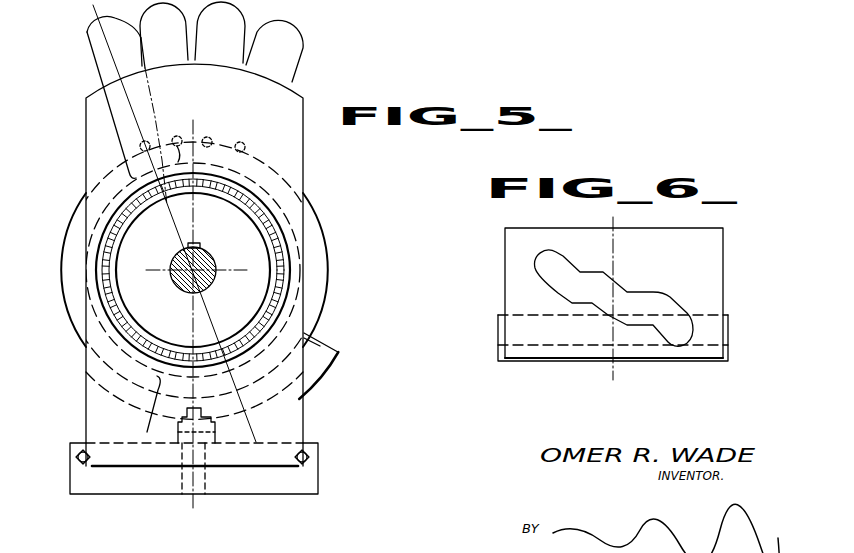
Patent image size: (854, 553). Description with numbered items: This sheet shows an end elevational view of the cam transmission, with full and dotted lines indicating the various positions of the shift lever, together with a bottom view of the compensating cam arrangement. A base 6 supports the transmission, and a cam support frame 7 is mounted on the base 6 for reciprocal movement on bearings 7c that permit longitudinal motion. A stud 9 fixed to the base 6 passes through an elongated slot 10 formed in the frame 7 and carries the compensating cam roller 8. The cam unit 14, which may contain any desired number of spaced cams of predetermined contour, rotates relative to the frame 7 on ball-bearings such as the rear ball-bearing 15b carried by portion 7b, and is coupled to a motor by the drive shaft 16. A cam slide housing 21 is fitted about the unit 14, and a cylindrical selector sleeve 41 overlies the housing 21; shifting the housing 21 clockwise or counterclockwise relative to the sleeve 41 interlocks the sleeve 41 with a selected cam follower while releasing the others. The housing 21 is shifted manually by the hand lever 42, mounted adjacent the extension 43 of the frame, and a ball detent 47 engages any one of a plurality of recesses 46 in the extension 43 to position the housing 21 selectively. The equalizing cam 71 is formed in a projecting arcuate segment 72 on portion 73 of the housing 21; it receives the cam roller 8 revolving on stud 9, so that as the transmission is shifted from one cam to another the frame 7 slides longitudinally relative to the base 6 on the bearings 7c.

In FIG. 5, the base 6 is at (313, 490).
In FIG. 5, the cam support frame 7 is at (80, 387).
In FIG. 5, the portion of the frame 7b is at (93, 408).
In FIG. 5, the bearings 7c is at (78, 458).
In FIG. 5, the compensating cam roller 8 is at (178, 427).
In FIG. 5, the stud 9 is at (205, 468).
In FIG. 5, the elongated slot 10 is at (183, 468).
In FIG. 5, the cam unit 14 is at (257, 263).
In FIG. 5, the rear ball-bearing 15b is at (275, 238).
In FIG. 5, the drive shaft 16 is at (181, 291).
In FIG. 5, the cam slide housing 21 is at (270, 201).
In FIG. 6, the cam slide housing 21 is at (730, 327).
In FIG. 5, the cylindrical sleeve 41 is at (312, 276).
In FIG. 5, the hand lever 42 is at (92, 46).
In FIG. 5, the extension of the cam supporting frame 43 is at (293, 99).
In FIG. 5, the recesses 46 is at (241, 142).
In FIG. 5, the ball detent 47 is at (178, 140).
In FIG. 5, the equalizing cam 71 is at (310, 371).
In FIG. 6, the equalizing cam 71 is at (587, 272).
In FIG. 5, the projecting arcuate segment 72 is at (330, 347).
In FIG. 6, the projecting arcuate segment 72 is at (707, 272).
In FIG. 5, the portion of the cam roll slide housing 73 is at (308, 334).
In FIG. 6, the portion of the cam roll slide housing 73 is at (640, 355).